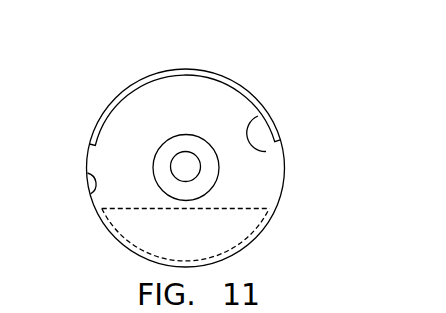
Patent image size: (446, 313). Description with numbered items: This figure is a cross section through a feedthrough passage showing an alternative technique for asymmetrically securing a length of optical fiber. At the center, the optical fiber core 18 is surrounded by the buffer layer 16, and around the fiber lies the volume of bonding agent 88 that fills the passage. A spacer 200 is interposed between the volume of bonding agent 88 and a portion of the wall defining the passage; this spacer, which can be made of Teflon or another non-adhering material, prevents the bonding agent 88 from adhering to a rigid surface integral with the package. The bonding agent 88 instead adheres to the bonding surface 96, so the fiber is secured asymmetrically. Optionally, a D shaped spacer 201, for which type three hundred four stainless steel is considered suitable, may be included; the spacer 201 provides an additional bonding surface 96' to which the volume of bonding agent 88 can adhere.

The volume of bonding agent 88 is at (176, 88).
The buffer layer 16 is at (160, 172).
The optical fiber core 18 is at (186, 163).
The spacer 200 is at (266, 152).
The bonding surface 96 is at (67, 195).
The bonding surface 96' is at (220, 196).
The D shaped spacer 201 is at (237, 220).